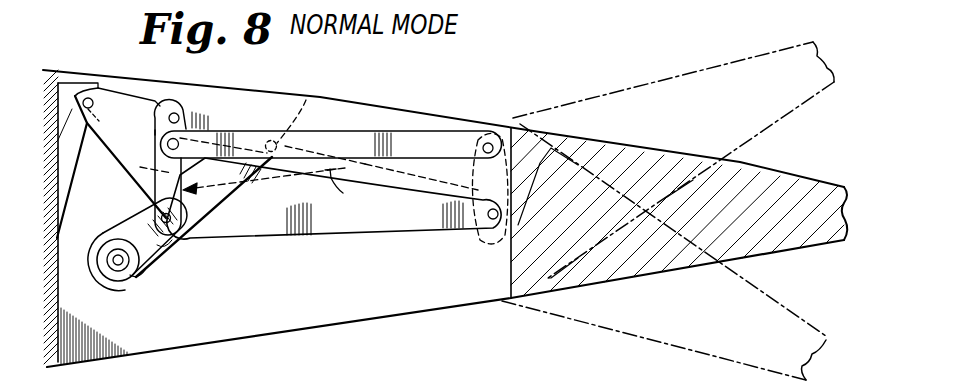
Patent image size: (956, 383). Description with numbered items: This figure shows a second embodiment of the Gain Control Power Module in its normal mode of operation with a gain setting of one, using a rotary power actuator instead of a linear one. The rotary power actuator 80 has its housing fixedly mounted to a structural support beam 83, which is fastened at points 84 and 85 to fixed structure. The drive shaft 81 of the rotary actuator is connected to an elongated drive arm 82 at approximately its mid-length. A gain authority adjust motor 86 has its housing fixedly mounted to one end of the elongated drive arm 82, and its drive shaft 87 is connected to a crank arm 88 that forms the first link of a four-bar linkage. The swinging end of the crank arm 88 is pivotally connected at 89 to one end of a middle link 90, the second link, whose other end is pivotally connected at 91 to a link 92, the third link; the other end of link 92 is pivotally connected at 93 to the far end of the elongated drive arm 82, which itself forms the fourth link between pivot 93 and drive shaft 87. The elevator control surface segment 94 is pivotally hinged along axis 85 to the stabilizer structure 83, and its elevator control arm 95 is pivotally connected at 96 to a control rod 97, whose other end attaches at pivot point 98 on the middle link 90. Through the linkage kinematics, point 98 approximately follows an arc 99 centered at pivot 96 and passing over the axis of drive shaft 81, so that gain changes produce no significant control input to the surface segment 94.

The rotary power actuator 80 is at (195, 248).
The drive shaft 81 is at (220, 223).
The elongated drive arm 82 is at (158, 255).
The structural support beam 83 is at (315, 236).
The fastening point 84 is at (108, 92).
The fastening point and hinge axis 85 is at (483, 236).
The gain authority adjust motor 86 is at (112, 294).
The drive shaft 87 is at (140, 272).
The crank arm 88 is at (172, 238).
The pivotal connection 89 is at (160, 215).
The middle link 90 is at (152, 173).
The pivotal connection 91 is at (186, 108).
The link 92 is at (218, 131).
The pivotal connection 93 is at (306, 100).
The elevator control surface segment 94 is at (776, 170).
The elevator control arm 95 is at (485, 172).
The pivotal connection 96 is at (490, 142).
The control rod 97 is at (373, 131).
The pivotal attach point 98 is at (168, 115).
The arc 99 is at (150, 160).